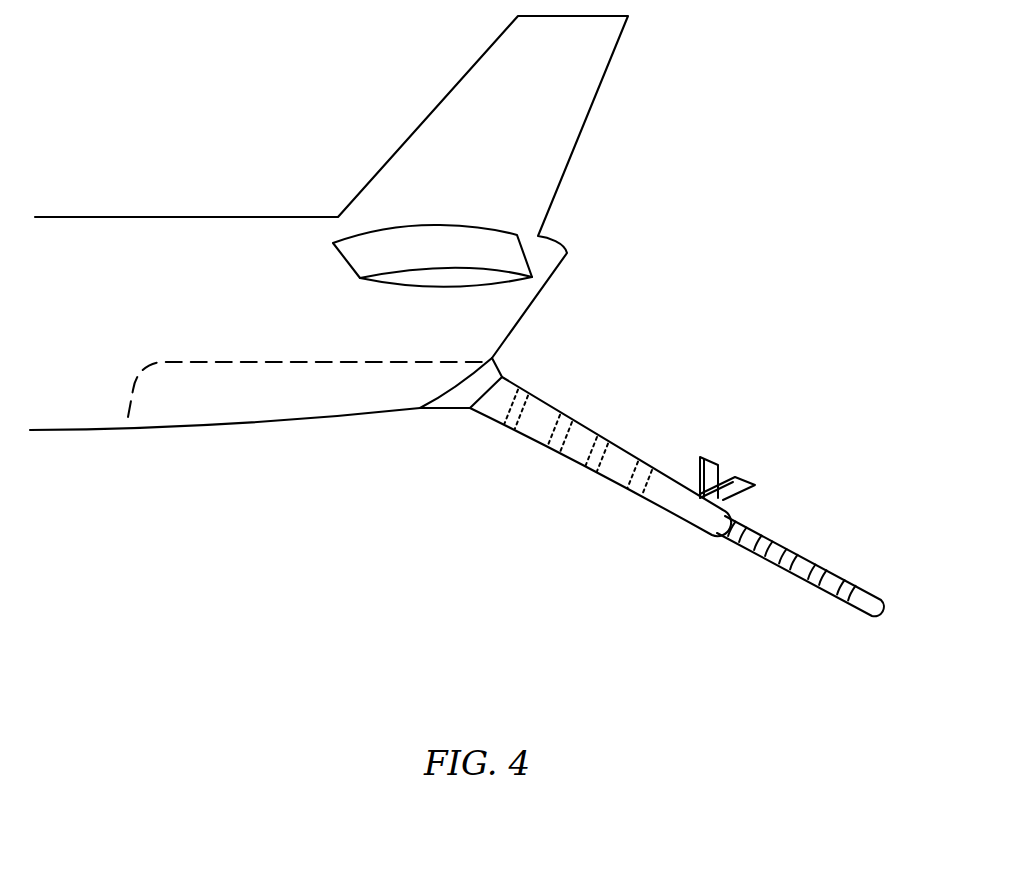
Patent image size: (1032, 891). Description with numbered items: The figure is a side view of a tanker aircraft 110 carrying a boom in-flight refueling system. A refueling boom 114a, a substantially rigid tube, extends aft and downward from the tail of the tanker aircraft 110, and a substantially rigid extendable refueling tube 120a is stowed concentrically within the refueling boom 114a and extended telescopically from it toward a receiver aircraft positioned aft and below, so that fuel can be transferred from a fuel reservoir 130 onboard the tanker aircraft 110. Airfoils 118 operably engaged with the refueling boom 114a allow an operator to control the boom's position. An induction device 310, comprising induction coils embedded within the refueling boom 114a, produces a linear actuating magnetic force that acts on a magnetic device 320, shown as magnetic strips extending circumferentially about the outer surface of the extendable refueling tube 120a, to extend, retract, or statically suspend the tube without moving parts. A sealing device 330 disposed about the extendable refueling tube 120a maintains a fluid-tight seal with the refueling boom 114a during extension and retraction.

The tanker aircraft 110 is at (130, 262).
The fuel reservoir 130 is at (253, 407).
The refueling boom 114a is at (498, 398).
The sealing device 330 is at (628, 462).
The induction device 310 is at (652, 500).
The airfoils 118 is at (737, 462).
The substantially rigid extendable refueling tube 120a is at (870, 617).
The magnetic device 320 is at (755, 523).